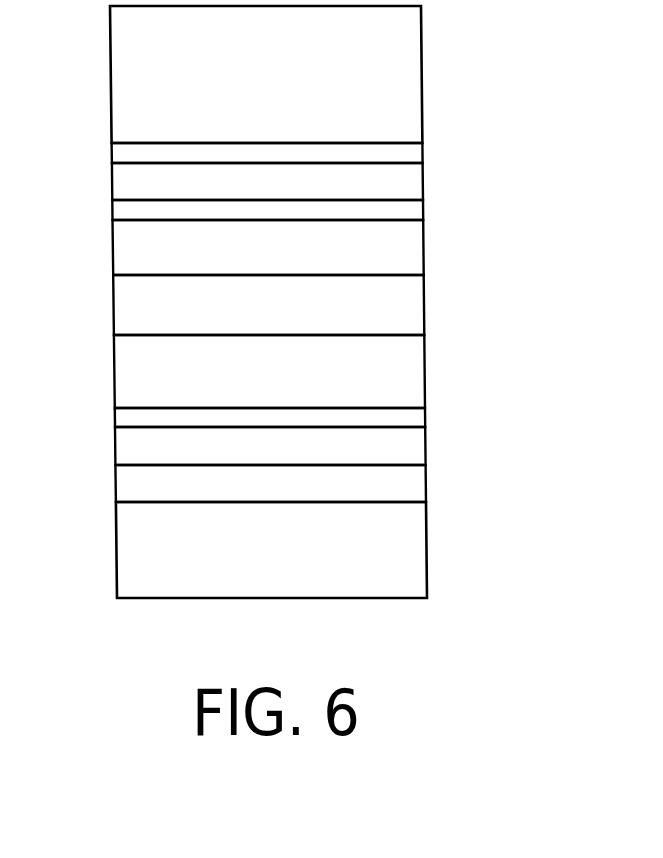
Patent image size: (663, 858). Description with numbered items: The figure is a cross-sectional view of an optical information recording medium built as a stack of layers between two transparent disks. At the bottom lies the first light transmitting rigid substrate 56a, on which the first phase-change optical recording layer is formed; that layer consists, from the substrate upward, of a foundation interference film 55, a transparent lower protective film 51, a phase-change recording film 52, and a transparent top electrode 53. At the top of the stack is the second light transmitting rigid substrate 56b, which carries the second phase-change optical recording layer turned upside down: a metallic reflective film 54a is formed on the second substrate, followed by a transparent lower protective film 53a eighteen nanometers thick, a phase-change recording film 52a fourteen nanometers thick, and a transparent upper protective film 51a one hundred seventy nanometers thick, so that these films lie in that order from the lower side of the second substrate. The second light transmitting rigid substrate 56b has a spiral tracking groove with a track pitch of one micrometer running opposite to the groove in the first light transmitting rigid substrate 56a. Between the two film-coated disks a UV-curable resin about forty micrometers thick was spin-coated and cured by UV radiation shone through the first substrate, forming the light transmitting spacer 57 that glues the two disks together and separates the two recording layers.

The second light transmitting rigid substrate 56b is at (400, 64).
The metallic reflective film 54a is at (400, 152).
The transparent lower protective film 53a is at (400, 184).
The phase-change recording film 52a is at (400, 214).
The transparent upper protective film 51a is at (400, 249).
The light transmitting spacer 57 is at (126, 308).
The transparent top electrode 53 is at (402, 358).
The phase-change recording film 52 is at (402, 415).
The transparent lower protective film 51 is at (402, 447).
The foundation interference film 55 is at (402, 484).
The first light transmitting rigid substrate 56a is at (404, 545).